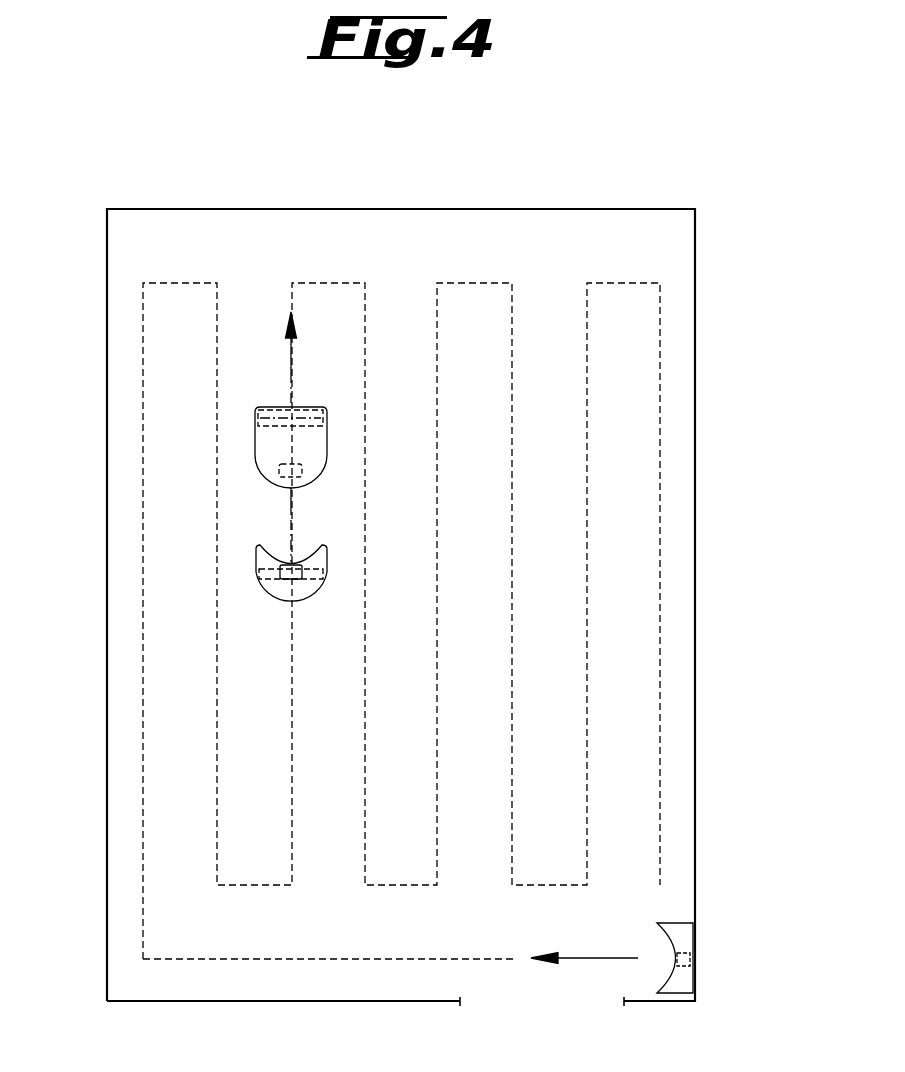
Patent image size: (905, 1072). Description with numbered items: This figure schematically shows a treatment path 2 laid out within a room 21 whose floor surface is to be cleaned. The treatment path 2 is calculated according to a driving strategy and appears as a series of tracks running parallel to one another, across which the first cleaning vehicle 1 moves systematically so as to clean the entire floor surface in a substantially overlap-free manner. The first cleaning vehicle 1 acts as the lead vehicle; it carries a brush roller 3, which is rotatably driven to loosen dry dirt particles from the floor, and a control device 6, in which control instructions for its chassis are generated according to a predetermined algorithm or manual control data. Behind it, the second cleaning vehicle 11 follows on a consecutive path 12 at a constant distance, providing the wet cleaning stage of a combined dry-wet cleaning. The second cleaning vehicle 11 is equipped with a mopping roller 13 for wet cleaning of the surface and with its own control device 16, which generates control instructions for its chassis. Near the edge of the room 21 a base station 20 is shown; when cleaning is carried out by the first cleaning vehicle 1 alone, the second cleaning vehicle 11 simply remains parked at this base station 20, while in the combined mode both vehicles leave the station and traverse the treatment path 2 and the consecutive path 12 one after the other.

The first cleaning vehicle 1 is at (265, 442).
The treatment path 2 is at (217, 702).
The brush roller 3 is at (273, 417).
The control device 6 is at (297, 472).
The second cleaning vehicle 11 is at (258, 558).
The consecutive path 12 is at (291, 525).
The mopping roller 13 is at (272, 579).
The control device 16 is at (298, 579).
The base station 20 is at (685, 937).
The room 21 is at (695, 538).